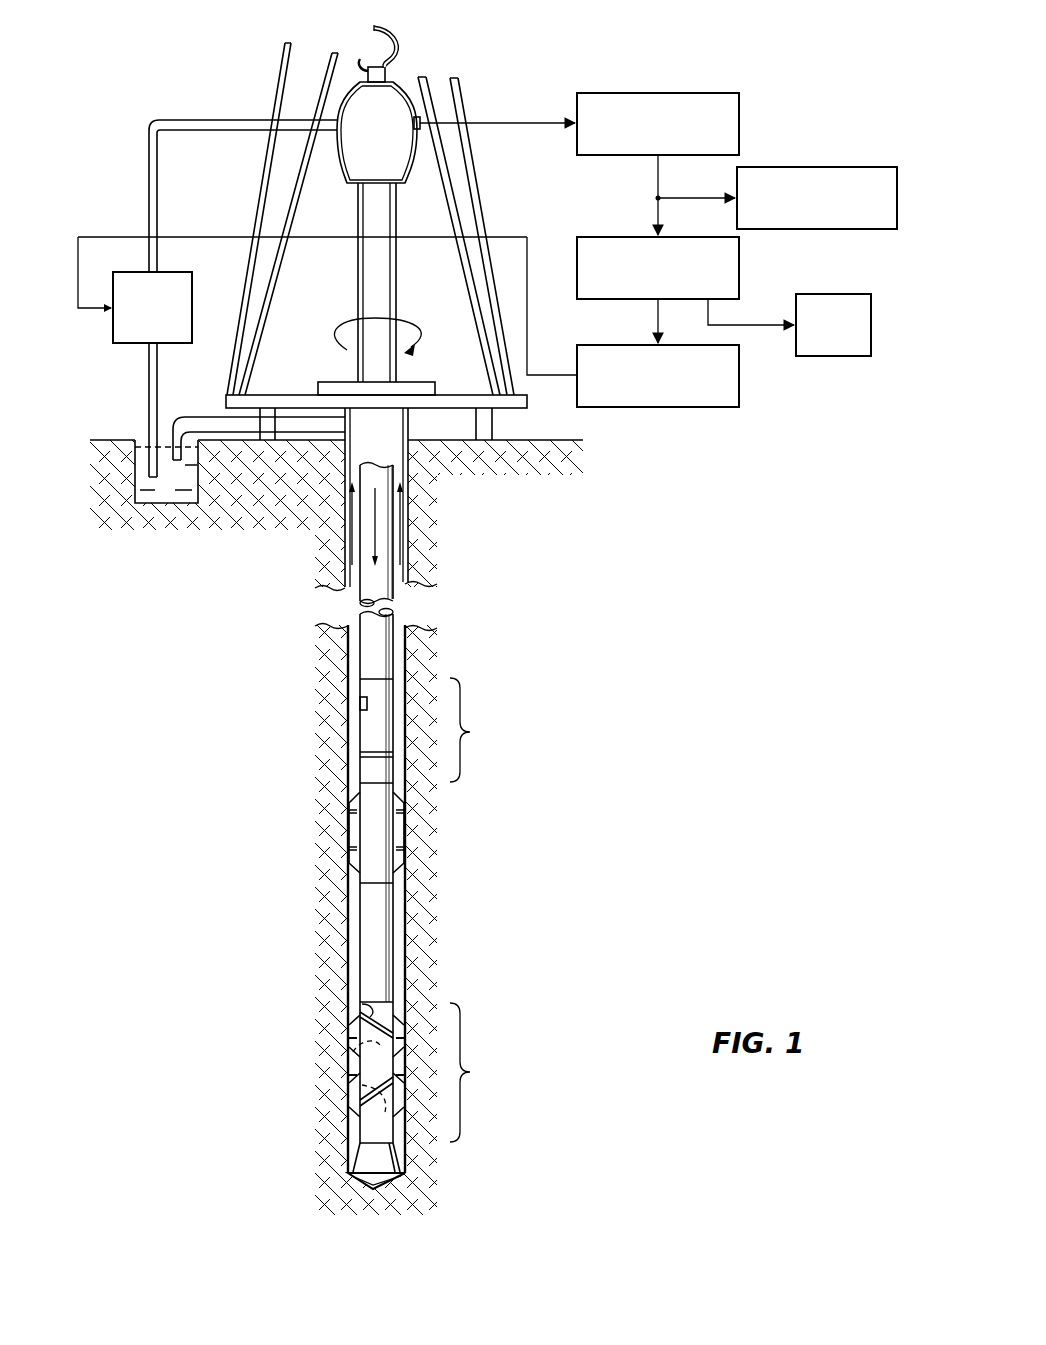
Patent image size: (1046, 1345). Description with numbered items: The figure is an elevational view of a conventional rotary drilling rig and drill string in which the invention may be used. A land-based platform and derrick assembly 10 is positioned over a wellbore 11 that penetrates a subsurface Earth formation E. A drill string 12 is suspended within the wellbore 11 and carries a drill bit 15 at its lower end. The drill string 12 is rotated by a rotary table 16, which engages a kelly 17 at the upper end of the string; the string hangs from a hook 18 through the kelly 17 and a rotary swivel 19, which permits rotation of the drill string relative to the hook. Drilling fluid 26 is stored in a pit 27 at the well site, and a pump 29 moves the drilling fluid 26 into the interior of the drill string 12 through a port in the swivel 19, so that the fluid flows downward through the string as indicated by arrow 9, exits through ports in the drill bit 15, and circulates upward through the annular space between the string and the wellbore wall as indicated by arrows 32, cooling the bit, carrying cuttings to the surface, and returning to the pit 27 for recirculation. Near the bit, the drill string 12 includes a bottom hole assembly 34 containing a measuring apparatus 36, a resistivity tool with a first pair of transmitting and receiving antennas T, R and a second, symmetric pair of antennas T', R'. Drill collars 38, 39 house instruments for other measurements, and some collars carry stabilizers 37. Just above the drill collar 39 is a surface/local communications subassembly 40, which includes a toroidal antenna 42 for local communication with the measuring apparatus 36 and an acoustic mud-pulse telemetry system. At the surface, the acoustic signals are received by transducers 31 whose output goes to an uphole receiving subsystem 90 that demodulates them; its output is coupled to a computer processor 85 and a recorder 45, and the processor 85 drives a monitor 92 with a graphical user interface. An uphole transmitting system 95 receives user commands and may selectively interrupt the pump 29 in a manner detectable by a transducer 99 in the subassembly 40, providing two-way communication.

The arrow 9 is at (375, 520).
The platform and derrick assembly 10 is at (563, 412).
The wellbore 11 is at (398, 587).
The drill string 12 is at (372, 633).
The drill bit 15 is at (368, 1157).
The rotary table 16 is at (415, 387).
The kelly 17 is at (382, 212).
The hook 18 is at (373, 32).
The rotary swivel 19 is at (363, 168).
The drilling fluid 26 is at (172, 500).
The pit 27 is at (132, 483).
The pump 29 is at (130, 344).
The transducers 31 is at (421, 130).
The arrows 32 is at (400, 537).
The bottom hole assembly 34 is at (633, 675).
The measuring apparatus 36 is at (470, 1072).
The stabilizers 37 is at (400, 833).
The drill collar 38 is at (370, 922).
The drill collar 39 is at (368, 827).
The surface/local communications subassembly 40 is at (470, 732).
The toroidal antenna 42 is at (373, 741).
The recorder 45 is at (797, 167).
The computer processor 85 is at (739, 281).
The uphole receiving subsystem 90 is at (680, 93).
The monitor 92 is at (843, 356).
The uphole transmitting system 95 is at (739, 375).
The transducer 99 is at (360, 705).
The Earth formation E is at (535, 807).
The transmitting antenna T is at (334, 1009).
The transmitting antenna T' is at (327, 1030).
The receiving antenna R is at (334, 1083).
The receiving antenna R' is at (330, 1101).